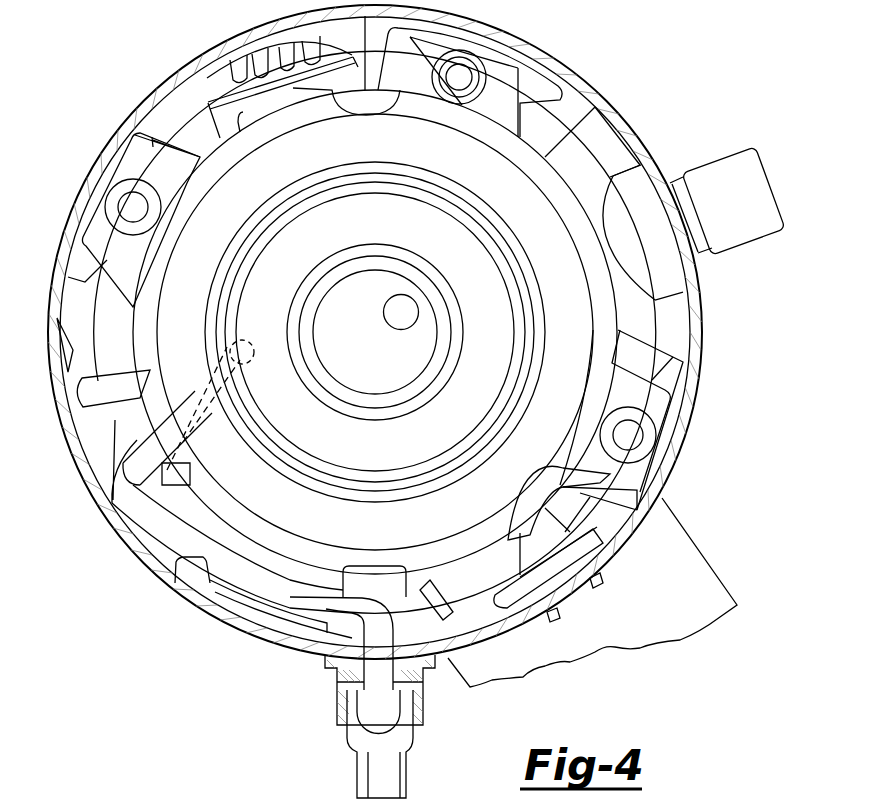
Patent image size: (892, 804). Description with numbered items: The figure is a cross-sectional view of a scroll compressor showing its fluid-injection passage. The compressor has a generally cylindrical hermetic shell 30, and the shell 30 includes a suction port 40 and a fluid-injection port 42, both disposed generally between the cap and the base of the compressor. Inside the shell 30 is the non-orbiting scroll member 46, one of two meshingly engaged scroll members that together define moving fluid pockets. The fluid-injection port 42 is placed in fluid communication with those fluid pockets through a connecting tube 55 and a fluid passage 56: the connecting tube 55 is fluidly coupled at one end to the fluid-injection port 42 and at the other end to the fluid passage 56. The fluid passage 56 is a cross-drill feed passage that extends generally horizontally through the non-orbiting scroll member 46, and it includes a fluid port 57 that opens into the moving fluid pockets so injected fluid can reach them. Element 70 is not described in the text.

The hermetic shell 30 is at (705, 377).
The suction port 40 is at (712, 160).
The fluid-injection port 42 is at (343, 733).
The non-orbiting scroll member 46 is at (277, 513).
The connecting tube 55 is at (178, 532).
The fluid passage 56 is at (196, 393).
The fluid port 57 is at (250, 350).
The mounting member 70 is at (131, 797).